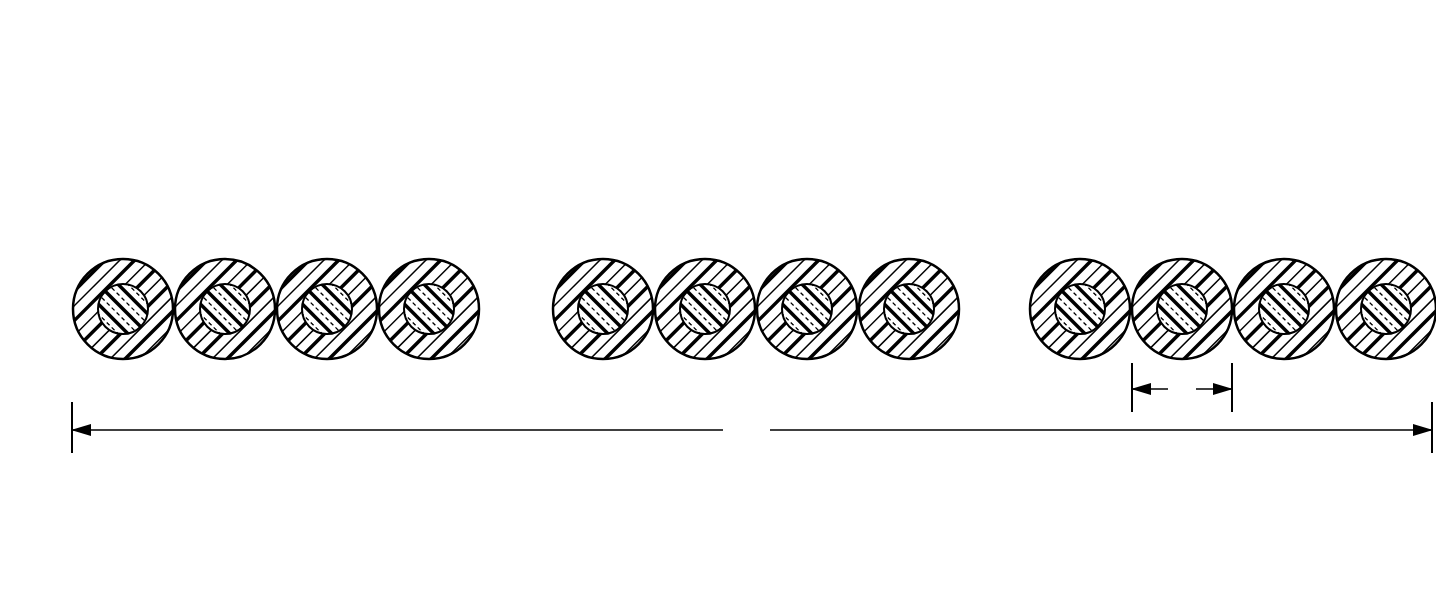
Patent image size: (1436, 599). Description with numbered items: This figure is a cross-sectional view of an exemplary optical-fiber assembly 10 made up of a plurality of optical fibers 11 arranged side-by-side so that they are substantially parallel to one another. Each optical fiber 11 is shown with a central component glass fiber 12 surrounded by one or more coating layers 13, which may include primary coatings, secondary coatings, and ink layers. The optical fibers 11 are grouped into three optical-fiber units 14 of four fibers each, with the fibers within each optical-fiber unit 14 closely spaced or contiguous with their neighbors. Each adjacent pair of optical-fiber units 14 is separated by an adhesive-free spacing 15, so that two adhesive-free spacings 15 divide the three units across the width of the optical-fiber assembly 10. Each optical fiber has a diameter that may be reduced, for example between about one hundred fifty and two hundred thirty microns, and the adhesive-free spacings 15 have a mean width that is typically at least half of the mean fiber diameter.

The optical-fiber assembly 10 is at (1312, 82).
The optical fiber 11 is at (232, 262).
The component glass fiber 12 is at (325, 295).
The coating layer 13 is at (363, 295).
The optical-fiber unit 14 is at (480, 168).
The adhesive-free spacing 15 is at (513, 268).